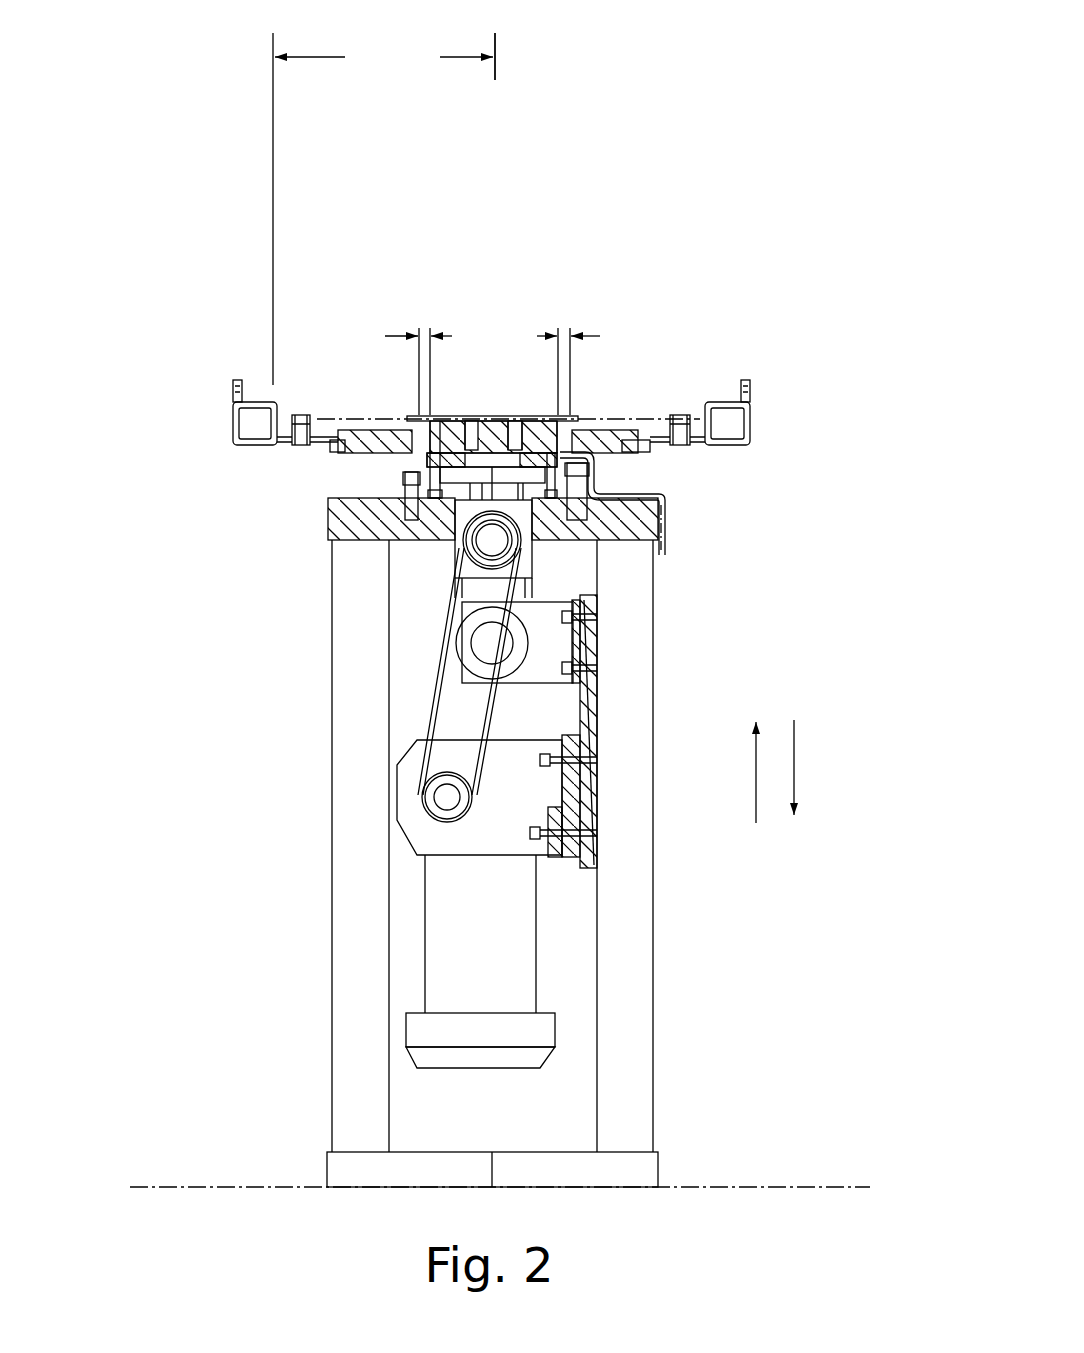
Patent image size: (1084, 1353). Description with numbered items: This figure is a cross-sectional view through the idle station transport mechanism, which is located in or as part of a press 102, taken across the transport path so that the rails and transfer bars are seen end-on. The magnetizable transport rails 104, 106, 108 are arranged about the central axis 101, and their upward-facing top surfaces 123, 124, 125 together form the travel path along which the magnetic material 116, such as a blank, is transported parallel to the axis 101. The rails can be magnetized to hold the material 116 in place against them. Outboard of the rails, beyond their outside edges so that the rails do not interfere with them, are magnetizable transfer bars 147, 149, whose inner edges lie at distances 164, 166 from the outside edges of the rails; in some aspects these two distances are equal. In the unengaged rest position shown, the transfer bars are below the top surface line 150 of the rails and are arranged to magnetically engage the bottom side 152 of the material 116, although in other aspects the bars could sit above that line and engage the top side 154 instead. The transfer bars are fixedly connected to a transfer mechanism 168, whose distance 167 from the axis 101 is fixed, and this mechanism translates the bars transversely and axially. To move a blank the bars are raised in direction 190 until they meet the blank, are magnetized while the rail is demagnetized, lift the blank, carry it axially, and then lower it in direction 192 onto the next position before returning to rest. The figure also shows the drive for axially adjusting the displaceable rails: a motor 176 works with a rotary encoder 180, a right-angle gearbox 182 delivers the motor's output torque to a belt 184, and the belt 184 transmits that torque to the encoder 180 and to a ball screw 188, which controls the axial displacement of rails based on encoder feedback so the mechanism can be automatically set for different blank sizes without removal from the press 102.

The axis 101 is at (582, 48).
The press 102 is at (739, 546).
The transport rail 104 is at (497, 413).
The transport rail 106 is at (321, 252).
The transport rail 108 is at (618, 278).
The magnetic material 116 is at (474, 413).
The top surface 123 is at (590, 258).
The top surface 124 is at (305, 284).
The top surface 125 is at (665, 299).
The transfer bar 147 is at (241, 399).
The transfer bar 149 is at (575, 450).
The top surface line 150 is at (718, 373).
The bottom side 152 is at (674, 503).
The top side 154 is at (357, 363).
The distance 164 is at (328, 299).
The distance 166 is at (619, 301).
The distance 167 is at (384, 209).
The transfer mechanism 168 is at (837, 423).
The motor 176 is at (355, 961).
The rotary encoder 180 is at (652, 729).
The right-angle gearbox 182 is at (388, 812).
The belt 184 is at (355, 671).
The ball screw 188 is at (361, 549).
The direction 190 is at (711, 812).
The direction 192 is at (842, 745).